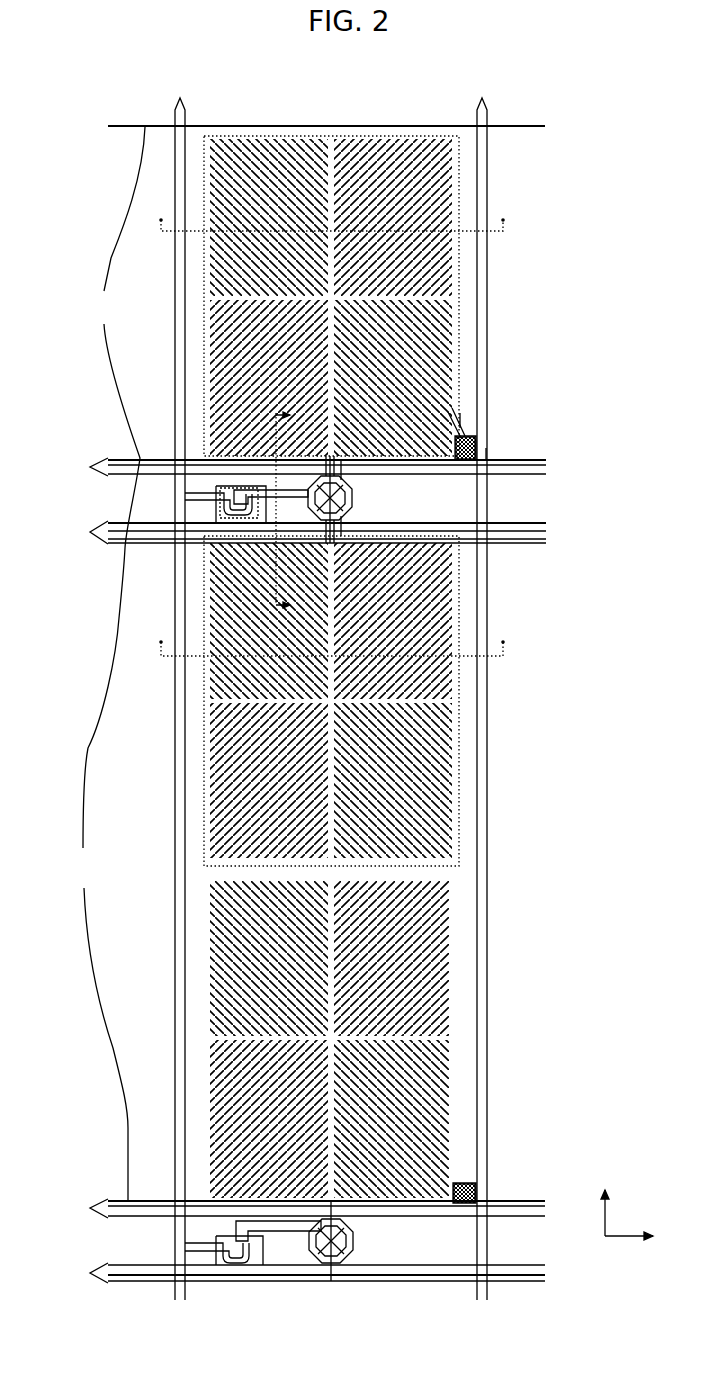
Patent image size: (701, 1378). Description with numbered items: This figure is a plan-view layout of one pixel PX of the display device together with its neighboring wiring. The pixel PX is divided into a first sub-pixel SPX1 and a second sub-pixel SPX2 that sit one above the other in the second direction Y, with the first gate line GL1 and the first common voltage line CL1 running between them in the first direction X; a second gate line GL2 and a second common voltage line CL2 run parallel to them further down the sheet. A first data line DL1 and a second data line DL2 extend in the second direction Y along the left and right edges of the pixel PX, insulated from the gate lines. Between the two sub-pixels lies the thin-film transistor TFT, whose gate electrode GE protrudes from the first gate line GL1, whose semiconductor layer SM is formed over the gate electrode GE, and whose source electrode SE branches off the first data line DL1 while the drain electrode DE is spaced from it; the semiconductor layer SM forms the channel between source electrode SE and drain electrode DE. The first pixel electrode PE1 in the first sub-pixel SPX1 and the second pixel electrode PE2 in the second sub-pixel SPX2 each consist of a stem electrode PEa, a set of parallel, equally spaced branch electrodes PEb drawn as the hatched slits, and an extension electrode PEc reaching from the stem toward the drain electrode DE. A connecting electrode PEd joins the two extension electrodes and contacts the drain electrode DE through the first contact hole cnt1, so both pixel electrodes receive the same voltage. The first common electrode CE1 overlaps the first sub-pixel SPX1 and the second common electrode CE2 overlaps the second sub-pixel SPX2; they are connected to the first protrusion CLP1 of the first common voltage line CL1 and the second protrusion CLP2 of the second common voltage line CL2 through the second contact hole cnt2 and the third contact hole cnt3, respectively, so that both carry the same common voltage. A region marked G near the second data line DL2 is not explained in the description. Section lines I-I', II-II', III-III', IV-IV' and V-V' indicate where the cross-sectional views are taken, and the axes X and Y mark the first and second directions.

The pixel PX is at (325, 632).
The first sub-pixel SPX1 is at (328, 296).
The second sub-pixel SPX2 is at (325, 701).
The first data line DL1 is at (172, 683).
The second data line DL2 is at (475, 683).
The first gate line GL1 is at (287, 529).
The second gate line GL2 is at (287, 1270).
The first common voltage line CL1 is at (287, 463).
The second common voltage line CL2 is at (287, 1205).
The first common electrode CE1 is at (109, 372).
The second common electrode CE2 is at (91, 909).
The first pixel electrode PE1 is at (328, 667).
The second pixel electrode PE2 is at (455, 684).
The stem electrode PEa is at (460, 292).
The branch electrodes PEb is at (460, 309).
The extension electrode PEc is at (446, 400).
The connecting electrode PEd is at (380, 499).
The first protrusion CLP1 is at (462, 438).
The second protrusion CLP2 is at (462, 1178).
The first contact hole cnt1 is at (346, 488).
The second contact hole cnt2 is at (468, 440).
The third contact hole cnt3 is at (468, 1185).
The thin-film transistor TFT is at (209, 472).
The gate electrode GE is at (216, 514).
The source electrode SE is at (232, 508).
The drain electrode DE is at (250, 480).
The semiconductor layer SM is at (230, 498).
The gap G is at (489, 551).
The section line I-I' I is at (326, 213).
The section line II-II' II is at (325, 634).
The section line III-III' III is at (288, 507).
The section line IV-IV' IV is at (354, 496).
The section line V-V' V is at (477, 423).
The first direction X is at (642, 1231).
The second direction Y is at (611, 1196).